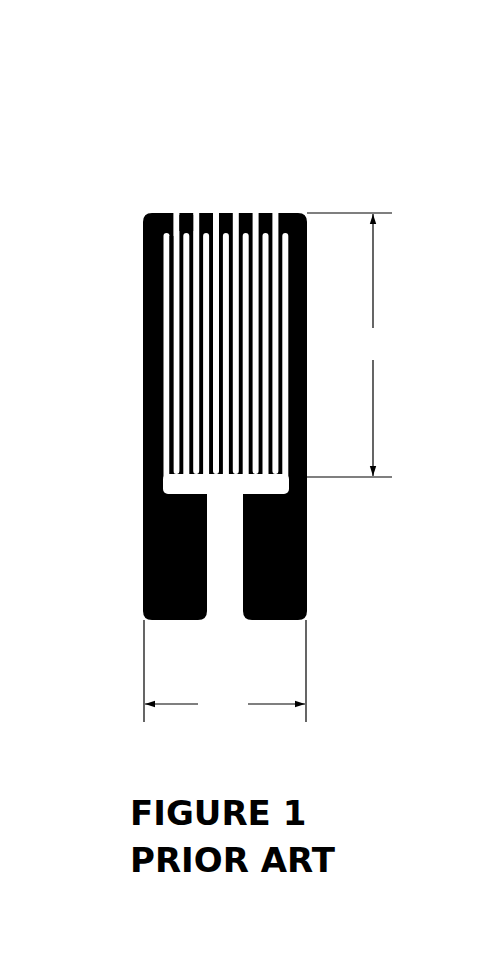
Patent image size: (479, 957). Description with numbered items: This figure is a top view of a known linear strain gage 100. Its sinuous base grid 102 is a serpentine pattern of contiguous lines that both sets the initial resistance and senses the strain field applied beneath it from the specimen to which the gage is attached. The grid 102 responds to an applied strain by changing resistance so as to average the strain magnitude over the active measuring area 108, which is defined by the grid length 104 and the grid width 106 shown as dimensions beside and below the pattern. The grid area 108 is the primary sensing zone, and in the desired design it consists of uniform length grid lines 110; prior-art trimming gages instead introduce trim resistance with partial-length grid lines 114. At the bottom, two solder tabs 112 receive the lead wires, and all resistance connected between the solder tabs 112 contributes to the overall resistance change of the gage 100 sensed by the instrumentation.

The linear strain gage 100 is at (285, 118).
The sinuous base grid 102 is at (212, 216).
The grid length 104 is at (350, 345).
The grid width 106 is at (225, 671).
The active measuring area 108 is at (145, 362).
The uniform length grid lines 110 is at (145, 322).
The solder tabs 112 is at (143, 552).
The partial-length grid lines 114 is at (163, 215).